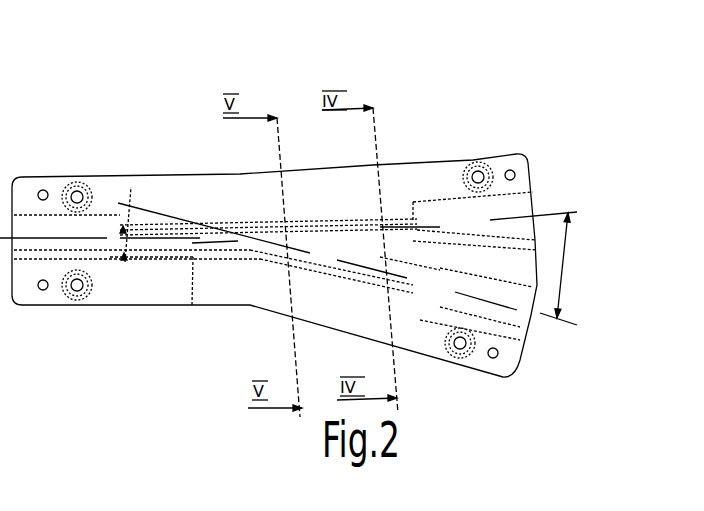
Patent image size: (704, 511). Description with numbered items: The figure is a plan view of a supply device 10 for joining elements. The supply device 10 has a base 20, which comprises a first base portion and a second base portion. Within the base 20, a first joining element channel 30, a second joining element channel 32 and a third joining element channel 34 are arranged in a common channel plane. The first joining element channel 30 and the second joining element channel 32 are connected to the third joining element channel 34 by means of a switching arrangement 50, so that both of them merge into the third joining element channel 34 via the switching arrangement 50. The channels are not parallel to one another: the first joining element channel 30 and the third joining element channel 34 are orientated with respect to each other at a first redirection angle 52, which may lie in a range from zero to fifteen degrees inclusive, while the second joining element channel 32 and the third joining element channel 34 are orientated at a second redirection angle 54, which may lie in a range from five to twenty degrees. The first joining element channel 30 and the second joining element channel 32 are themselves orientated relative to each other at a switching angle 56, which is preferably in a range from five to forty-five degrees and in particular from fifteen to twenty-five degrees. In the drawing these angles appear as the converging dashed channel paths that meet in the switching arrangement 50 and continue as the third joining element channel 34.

The supply device 10 is at (0, 22).
The base 20 is at (143, 177).
The first joining element channel 30 is at (328, 205).
The second joining element channel 32 is at (398, 298).
The third joining element channel 34 is at (192, 305).
The switching arrangement 50 is at (246, 210).
The first redirection angle 52 is at (145, 250).
The second redirection angle 54 is at (262, 202).
The switching angle 56 is at (572, 267).